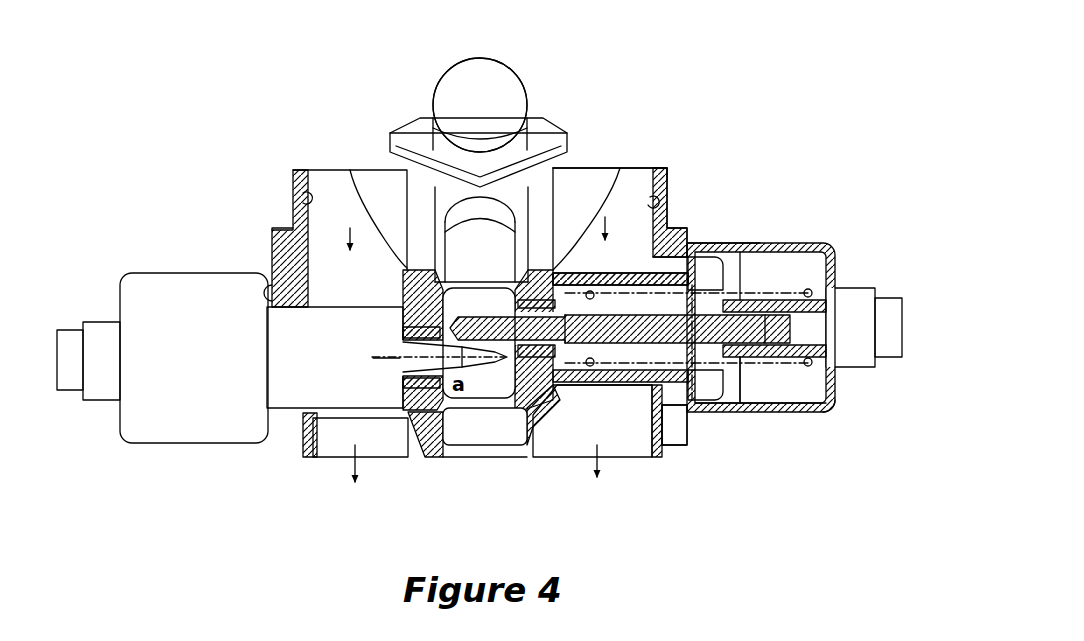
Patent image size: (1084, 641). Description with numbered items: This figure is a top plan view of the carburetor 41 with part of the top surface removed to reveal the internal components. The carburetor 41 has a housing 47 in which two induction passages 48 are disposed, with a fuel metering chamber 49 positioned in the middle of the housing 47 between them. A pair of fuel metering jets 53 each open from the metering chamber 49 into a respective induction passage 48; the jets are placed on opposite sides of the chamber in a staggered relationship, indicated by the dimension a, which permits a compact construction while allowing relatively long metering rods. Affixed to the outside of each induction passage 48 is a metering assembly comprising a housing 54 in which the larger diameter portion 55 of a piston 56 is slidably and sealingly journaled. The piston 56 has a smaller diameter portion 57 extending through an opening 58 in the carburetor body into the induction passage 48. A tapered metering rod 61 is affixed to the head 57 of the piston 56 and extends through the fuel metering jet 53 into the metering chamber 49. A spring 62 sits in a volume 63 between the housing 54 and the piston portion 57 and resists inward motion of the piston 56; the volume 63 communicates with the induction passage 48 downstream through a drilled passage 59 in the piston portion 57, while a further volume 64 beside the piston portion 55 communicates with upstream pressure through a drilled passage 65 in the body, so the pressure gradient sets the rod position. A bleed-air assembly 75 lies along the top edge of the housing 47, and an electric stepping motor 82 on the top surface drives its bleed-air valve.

The carburetor 41 is at (640, 130).
The housing 47 is at (667, 182).
The induction passages 48 is at (303, 193).
The fuel metering chamber 49 is at (480, 300).
The fuel metering jets 53 is at (545, 295).
The housing 54 is at (153, 273).
The larger diameter portion 55 is at (740, 395).
The piston 56 is at (749, 278).
The smaller diameter portion 57 is at (625, 270).
The opening 58 is at (270, 313).
The drilled passage 59 is at (573, 385).
The tapered metering rod 61 is at (500, 370).
The spring 62 is at (825, 412).
The volume 63 is at (767, 393).
The further volume 64 is at (705, 413).
The drilled passage 65 is at (708, 247).
The bleed-air assembly 75 is at (443, 60).
The electric stepping motor 82 is at (518, 68).